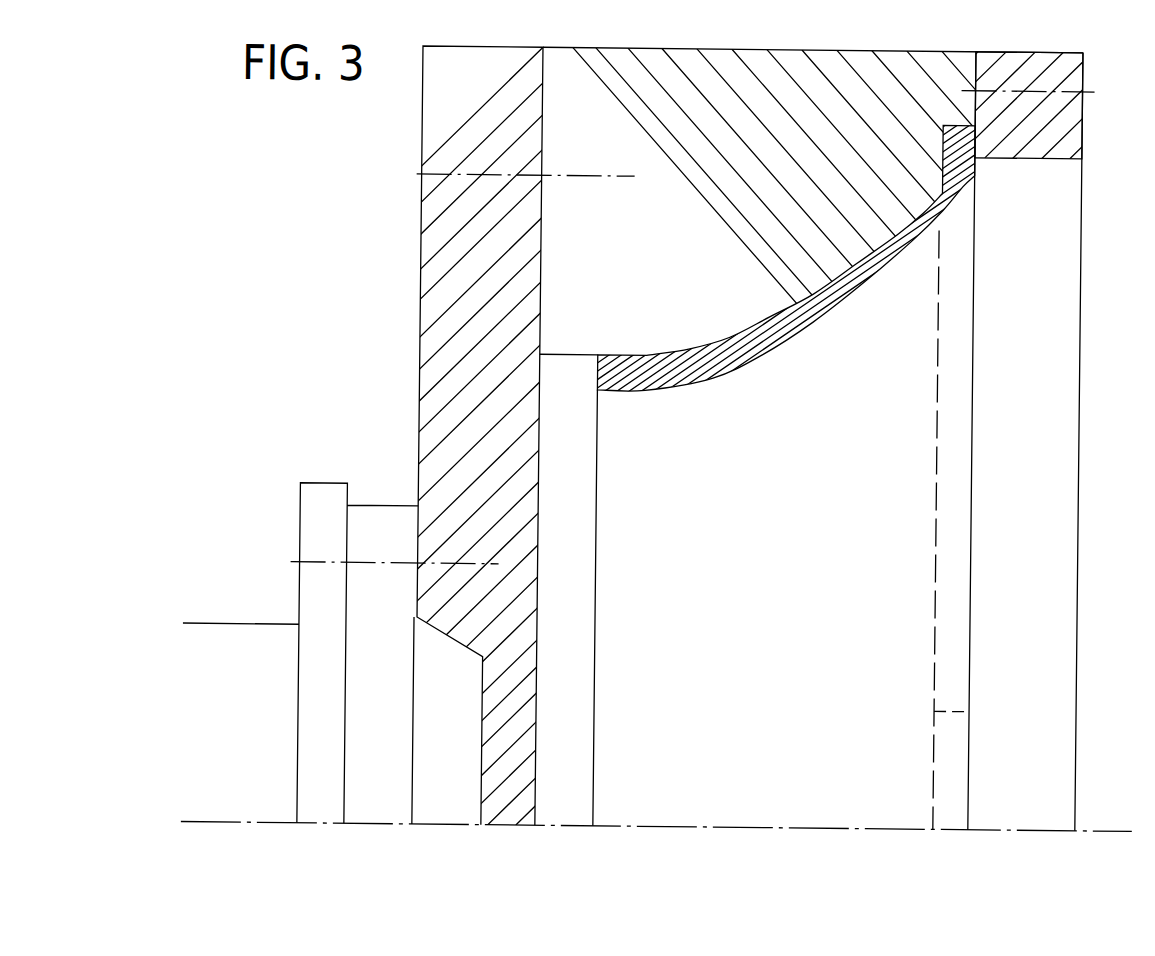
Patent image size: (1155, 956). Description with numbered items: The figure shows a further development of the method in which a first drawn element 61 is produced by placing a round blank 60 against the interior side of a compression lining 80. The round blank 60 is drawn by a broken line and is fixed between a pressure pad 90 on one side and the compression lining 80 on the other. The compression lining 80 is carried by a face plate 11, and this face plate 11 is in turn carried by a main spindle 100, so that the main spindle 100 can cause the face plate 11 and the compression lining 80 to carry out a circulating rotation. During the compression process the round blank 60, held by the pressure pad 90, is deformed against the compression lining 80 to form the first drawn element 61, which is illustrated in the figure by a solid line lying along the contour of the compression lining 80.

The face plate 11 is at (522, 511).
The compression lining 80 is at (847, 228).
The first drawn element 61 is at (748, 381).
The pressure pad 90 is at (1059, 123).
The round blank 60 is at (965, 564).
The main spindle 100 is at (276, 529).